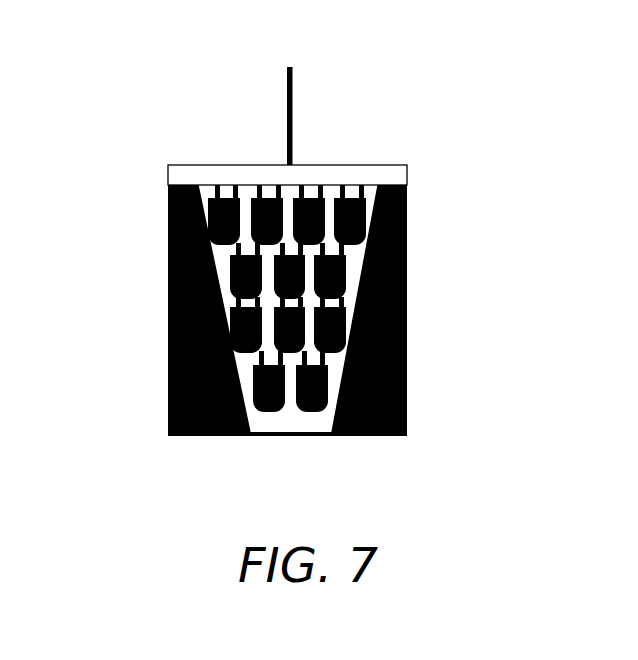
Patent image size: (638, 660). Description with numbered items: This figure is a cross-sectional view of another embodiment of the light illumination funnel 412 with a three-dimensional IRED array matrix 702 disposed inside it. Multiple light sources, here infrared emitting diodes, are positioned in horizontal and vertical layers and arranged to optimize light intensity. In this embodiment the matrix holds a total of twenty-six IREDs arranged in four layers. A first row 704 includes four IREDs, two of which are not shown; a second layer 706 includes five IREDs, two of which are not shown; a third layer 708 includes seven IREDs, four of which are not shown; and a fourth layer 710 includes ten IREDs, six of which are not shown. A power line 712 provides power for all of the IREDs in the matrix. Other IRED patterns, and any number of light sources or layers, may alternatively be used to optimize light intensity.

The three-dimensional IRED array matrix 702 is at (307, 258).
The first row 704 is at (335, 382).
The second layer 706 is at (407, 328).
The third layer 708 is at (347, 277).
The fourth layer 710 is at (349, 221).
The light illumination funnel 412 is at (407, 198).
The power line 712 is at (285, 127).